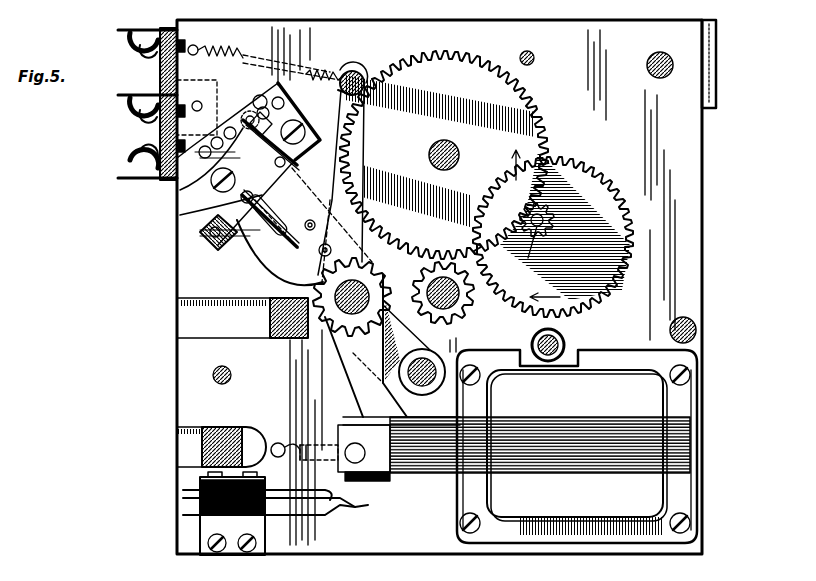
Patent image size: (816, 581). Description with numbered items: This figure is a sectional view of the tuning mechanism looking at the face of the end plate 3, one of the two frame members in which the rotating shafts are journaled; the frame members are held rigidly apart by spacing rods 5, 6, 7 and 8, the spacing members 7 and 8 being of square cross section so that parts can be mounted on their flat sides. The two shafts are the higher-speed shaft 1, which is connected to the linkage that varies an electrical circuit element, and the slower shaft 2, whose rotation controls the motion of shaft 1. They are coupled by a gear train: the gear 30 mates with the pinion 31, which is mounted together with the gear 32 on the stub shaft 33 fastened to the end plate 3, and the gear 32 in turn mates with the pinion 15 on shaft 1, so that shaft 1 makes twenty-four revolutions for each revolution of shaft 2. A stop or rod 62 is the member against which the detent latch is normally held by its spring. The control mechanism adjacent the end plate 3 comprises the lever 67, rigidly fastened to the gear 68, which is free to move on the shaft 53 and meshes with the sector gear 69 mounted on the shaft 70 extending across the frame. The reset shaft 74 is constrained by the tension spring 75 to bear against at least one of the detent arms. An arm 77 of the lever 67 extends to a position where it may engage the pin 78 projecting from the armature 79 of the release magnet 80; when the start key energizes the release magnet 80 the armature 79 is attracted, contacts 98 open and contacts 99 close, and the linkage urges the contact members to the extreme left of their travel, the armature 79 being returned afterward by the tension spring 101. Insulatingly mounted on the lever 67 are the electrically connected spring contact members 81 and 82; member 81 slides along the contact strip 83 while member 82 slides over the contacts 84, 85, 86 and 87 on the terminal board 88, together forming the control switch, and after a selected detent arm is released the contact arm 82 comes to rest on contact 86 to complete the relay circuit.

The shaft 1 is at (505, 344).
The shaft 2 is at (456, 163).
The end plate 3 is at (690, 244).
The spacing rod 5 is at (668, 57).
The spacing rod 6 is at (697, 328).
The spacing member 7 is at (292, 338).
The spacing member 8 is at (222, 427).
The pinion 15 is at (452, 344).
The gear 30 is at (475, 75).
The pinion 31 is at (533, 240).
The gear 32 is at (598, 168).
The stub shaft 33 is at (548, 220).
The shaft 53 is at (352, 297).
The stop rod 62 is at (229, 381).
The lever 67 is at (346, 107).
The gear 68 is at (425, 282).
The sector gear 69 is at (398, 341).
The shaft 70 is at (432, 366).
The reset shaft 74 is at (358, 74).
The tension spring 75 is at (330, 72).
The arm 77 is at (362, 404).
The pin 78 is at (342, 438).
The armature 79 is at (455, 455).
The release magnet 80 is at (598, 378).
The spring contact member 81 is at (268, 238).
The spring contact member 82 is at (293, 190).
The contact strip 83 is at (200, 233).
The contact 84 is at (192, 184).
The contact 85 is at (240, 140).
The contact 86 is at (265, 120).
The contact 87 is at (283, 107).
The terminal board 88 is at (215, 210).
The contacts 98 is at (330, 510).
The contacts 99 is at (332, 490).
The tension spring 101 is at (305, 445).